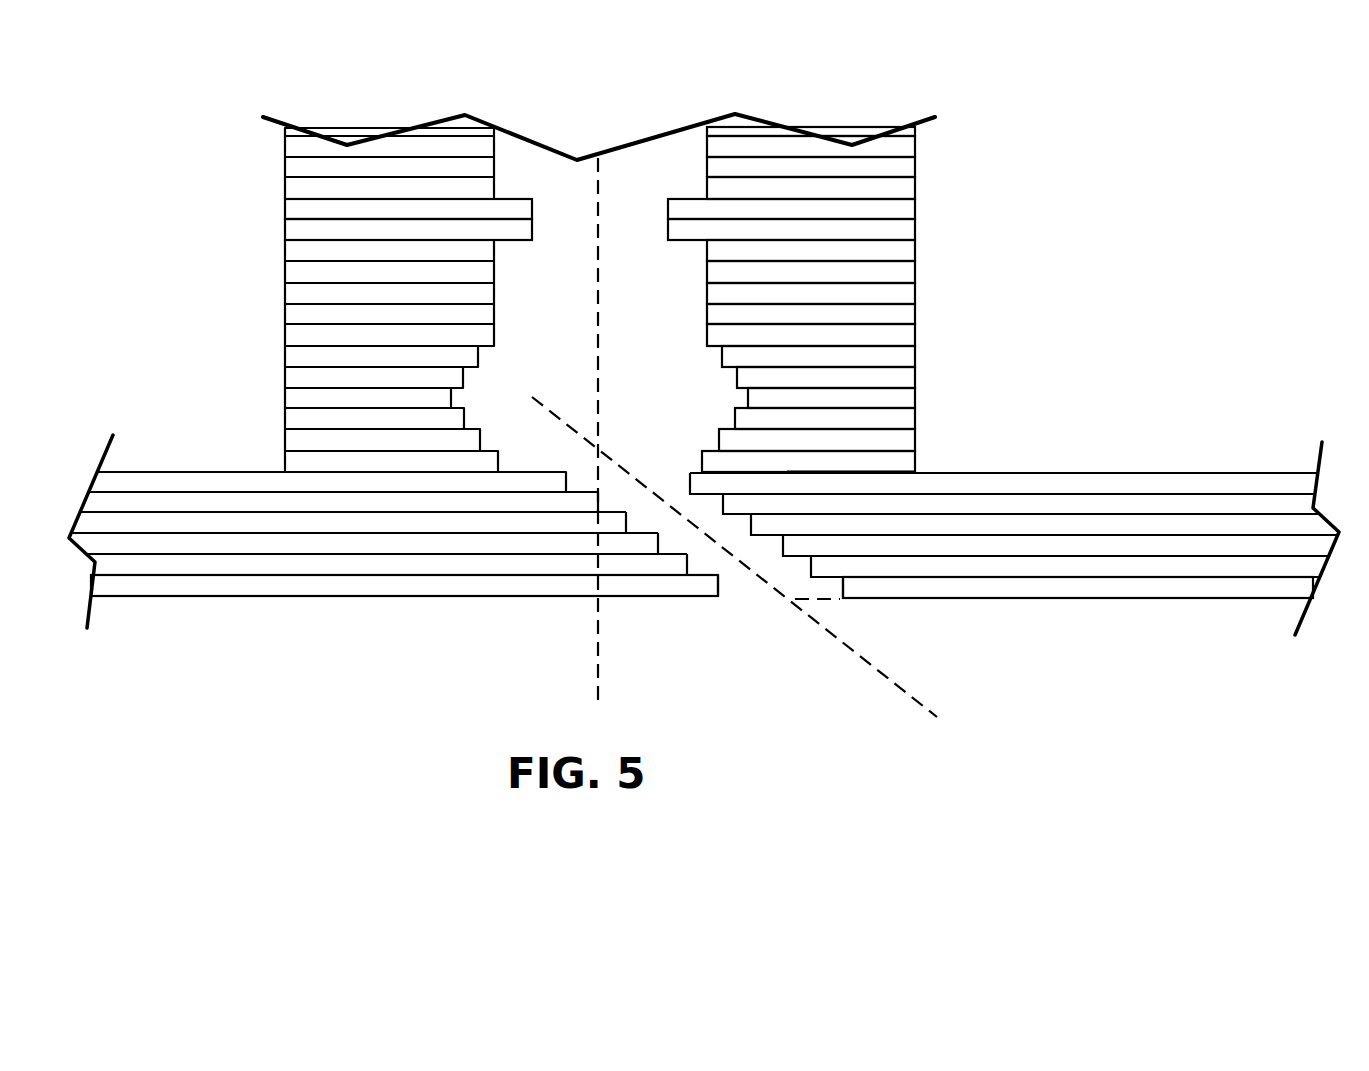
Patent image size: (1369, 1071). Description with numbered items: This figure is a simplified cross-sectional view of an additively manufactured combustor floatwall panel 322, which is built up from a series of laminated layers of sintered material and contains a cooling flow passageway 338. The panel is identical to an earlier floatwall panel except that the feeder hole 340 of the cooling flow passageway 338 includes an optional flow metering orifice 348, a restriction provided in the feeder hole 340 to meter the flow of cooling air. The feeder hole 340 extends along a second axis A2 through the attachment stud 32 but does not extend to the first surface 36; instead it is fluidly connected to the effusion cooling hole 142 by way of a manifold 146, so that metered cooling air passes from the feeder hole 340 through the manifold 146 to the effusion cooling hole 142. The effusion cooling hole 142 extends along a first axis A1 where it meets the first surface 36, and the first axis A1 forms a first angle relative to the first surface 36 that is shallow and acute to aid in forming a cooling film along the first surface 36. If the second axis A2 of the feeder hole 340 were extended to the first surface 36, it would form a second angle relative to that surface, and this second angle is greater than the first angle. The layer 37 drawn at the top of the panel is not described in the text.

The floatwall panel 322 is at (427, 637).
The effusion cooling hole 142 is at (718, 587).
The flow metering orifice 348 is at (533, 203).
The feeder hole 340 is at (497, 145).
The attachment stud 32 is at (917, 315).
The cooling flow passageway 338 is at (700, 316).
The manifold 146 is at (733, 418).
The top layer of second block 37 is at (1148, 474).
The first surface 36 is at (1147, 598).
The second axis A2 is at (597, 672).
The first axis A1 is at (900, 687).